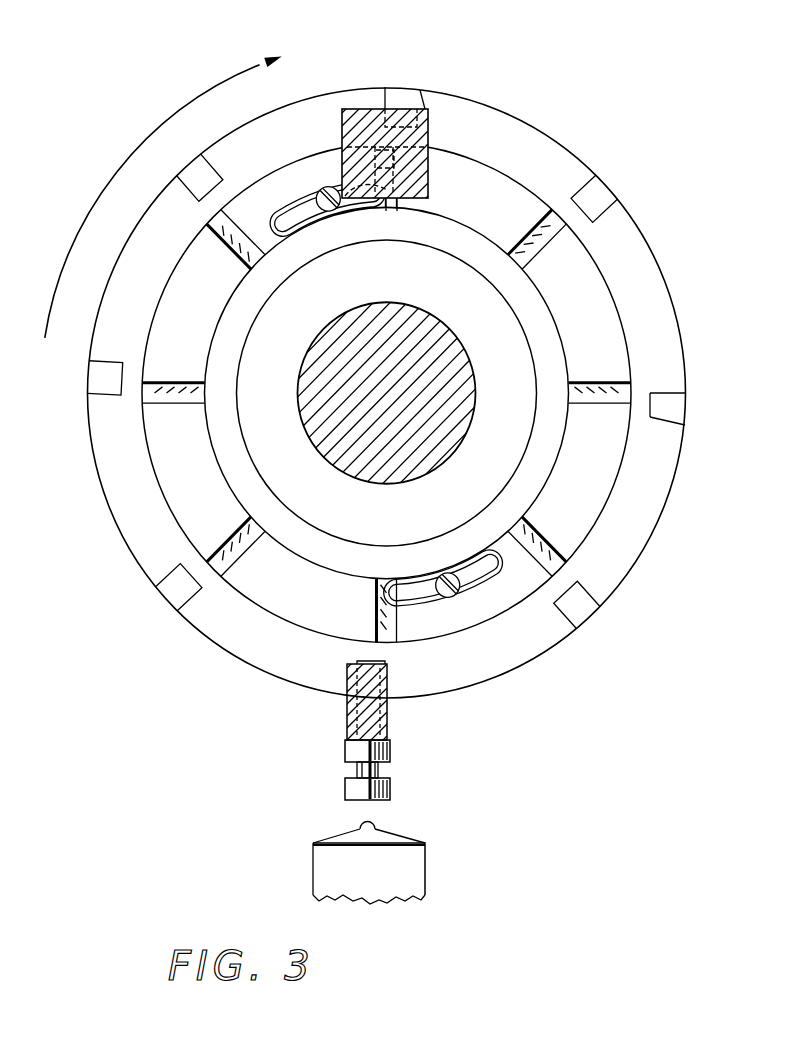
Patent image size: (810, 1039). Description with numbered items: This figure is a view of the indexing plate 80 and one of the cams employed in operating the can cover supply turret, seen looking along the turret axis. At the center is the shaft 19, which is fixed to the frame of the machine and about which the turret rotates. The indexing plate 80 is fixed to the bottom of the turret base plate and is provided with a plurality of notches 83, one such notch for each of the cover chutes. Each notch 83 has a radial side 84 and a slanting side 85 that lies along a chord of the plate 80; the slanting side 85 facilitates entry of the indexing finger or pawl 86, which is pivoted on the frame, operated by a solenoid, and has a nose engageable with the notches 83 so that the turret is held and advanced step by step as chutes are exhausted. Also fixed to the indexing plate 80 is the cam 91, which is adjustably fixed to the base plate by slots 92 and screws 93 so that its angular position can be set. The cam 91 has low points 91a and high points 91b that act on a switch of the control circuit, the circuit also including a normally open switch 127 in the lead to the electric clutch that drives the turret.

The shaft 19 is at (470, 372).
The indexing plate 80 is at (506, 672).
The notch 83 is at (690, 410).
The radial side 84 is at (672, 396).
The slanting side 85 is at (677, 425).
The indexing finger or pawl 86 is at (388, 719).
The cam 91 is at (620, 302).
The low point 91a is at (531, 546).
The high point 91b is at (407, 392).
The slot 92 is at (478, 560).
The screw 93 is at (447, 575).
The normally open switch 127 is at (426, 890).